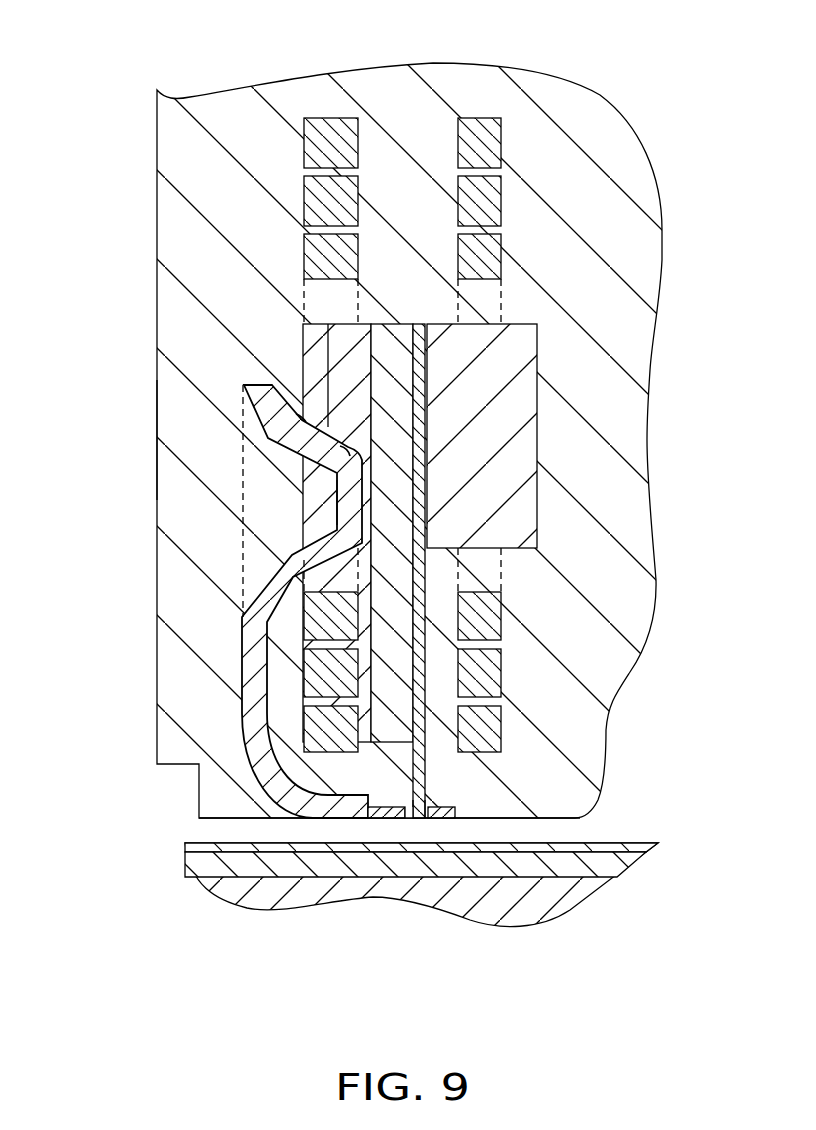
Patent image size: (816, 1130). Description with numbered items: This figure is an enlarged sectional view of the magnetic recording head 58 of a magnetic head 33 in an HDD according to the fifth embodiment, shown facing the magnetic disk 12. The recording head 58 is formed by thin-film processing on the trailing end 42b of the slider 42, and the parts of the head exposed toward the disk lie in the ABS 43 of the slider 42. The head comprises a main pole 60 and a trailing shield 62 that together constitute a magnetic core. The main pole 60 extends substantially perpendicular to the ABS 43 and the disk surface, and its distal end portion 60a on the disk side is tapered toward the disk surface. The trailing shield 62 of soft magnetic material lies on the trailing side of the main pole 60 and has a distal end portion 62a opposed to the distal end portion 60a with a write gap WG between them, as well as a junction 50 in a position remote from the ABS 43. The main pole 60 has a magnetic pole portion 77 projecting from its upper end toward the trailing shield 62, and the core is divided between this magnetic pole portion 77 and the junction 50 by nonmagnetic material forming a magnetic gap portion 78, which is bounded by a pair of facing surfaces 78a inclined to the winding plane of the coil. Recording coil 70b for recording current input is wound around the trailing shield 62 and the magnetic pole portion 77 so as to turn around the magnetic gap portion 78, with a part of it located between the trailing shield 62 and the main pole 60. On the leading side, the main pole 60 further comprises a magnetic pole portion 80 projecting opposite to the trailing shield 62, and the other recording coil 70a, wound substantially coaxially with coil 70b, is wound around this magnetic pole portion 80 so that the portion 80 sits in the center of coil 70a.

The magnetic head 33 is at (378, 410).
The slider 42 is at (620, 142).
The trailing end of the slider 42b is at (157, 435).
The magnetic recording head 58 is at (401, 409).
The magnetic pole portion 77 is at (338, 357).
The main pole 60 is at (398, 690).
The magnetic pole portion 80 is at (530, 424).
The trailing shield 62 is at (248, 680).
The magnetic gap portion 78 is at (229, 601).
The facing surfaces 78a is at (295, 424).
The junction 50 is at (340, 513).
The distal end portion of the trailing shield 62a is at (374, 822).
The distal end portion of the main pole 60a is at (422, 822).
The write gap WG is at (408, 822).
The recording coil 70b is at (327, 118).
The recording coil 70a is at (480, 118).
The ABS 43 is at (528, 820).
The magnetic disk 12 is at (626, 870).